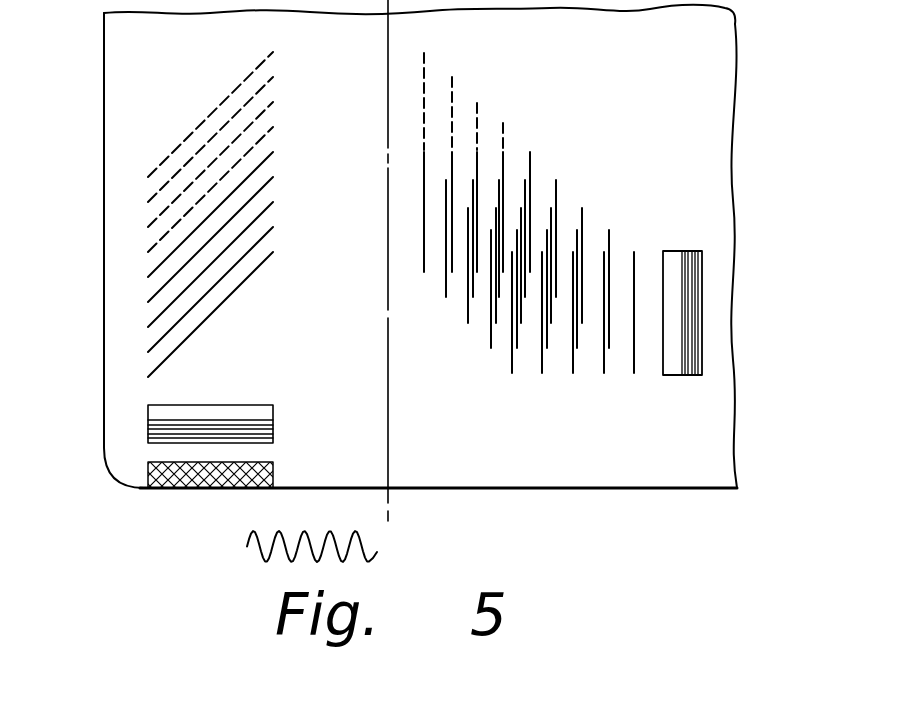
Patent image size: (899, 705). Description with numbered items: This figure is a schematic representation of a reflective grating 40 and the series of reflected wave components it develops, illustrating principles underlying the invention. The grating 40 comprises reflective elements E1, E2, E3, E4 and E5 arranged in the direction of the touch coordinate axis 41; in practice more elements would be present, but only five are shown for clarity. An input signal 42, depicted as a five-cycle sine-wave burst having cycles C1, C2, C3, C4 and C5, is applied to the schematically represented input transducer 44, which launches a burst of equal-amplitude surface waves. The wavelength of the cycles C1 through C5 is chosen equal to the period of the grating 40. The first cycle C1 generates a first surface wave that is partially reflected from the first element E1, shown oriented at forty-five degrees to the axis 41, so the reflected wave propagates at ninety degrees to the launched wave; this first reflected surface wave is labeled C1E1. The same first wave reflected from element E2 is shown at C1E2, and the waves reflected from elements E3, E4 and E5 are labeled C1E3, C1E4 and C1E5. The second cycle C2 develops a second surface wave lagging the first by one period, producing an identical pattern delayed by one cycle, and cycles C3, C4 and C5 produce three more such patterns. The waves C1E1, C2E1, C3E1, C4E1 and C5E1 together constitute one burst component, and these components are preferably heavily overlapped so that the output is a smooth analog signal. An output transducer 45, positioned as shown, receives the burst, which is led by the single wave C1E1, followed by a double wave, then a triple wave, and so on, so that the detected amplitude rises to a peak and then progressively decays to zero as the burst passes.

The reflective grating 40 is at (275, 143).
The touch coordinate axis 41 is at (388, 365).
The input signal 42 is at (289, 565).
The input transducer 44 is at (149, 420).
The output transducer 45 is at (702, 298).
The first reflective element E1 is at (149, 376).
The second reflective element E2 is at (149, 350).
The third reflective element E3 is at (149, 325).
The fourth reflective element E4 is at (149, 300).
The fifth reflective element E5 is at (149, 274).
The first reflected surface wave C1E1 is at (634, 255).
The reflected surface wave from element E2 C1E2 is at (609, 232).
The reflected surface wave from element E3 C1E3 is at (582, 210).
The reflected surface wave from element E4 C1E4 is at (556, 183).
The reflected surface wave from element E5 C1E5 is at (530, 154).
The second-cycle wave reflected from element E1 C2E1 is at (604, 372).
The third-cycle wave reflected from element E1 C3E1 is at (573, 372).
The fourth-cycle wave reflected from element E1 C4E1 is at (542, 372).
The fifth-cycle wave reflected from element E1 C5E1 is at (512, 372).
The first cycle of input signal C1 is at (354, 513).
The second cycle of input signal C2 is at (328, 513).
The third cycle of input signal C3 is at (302, 513).
The fourth cycle of input signal C4 is at (276, 513).
The fifth cycle of input signal C5 is at (250, 513).